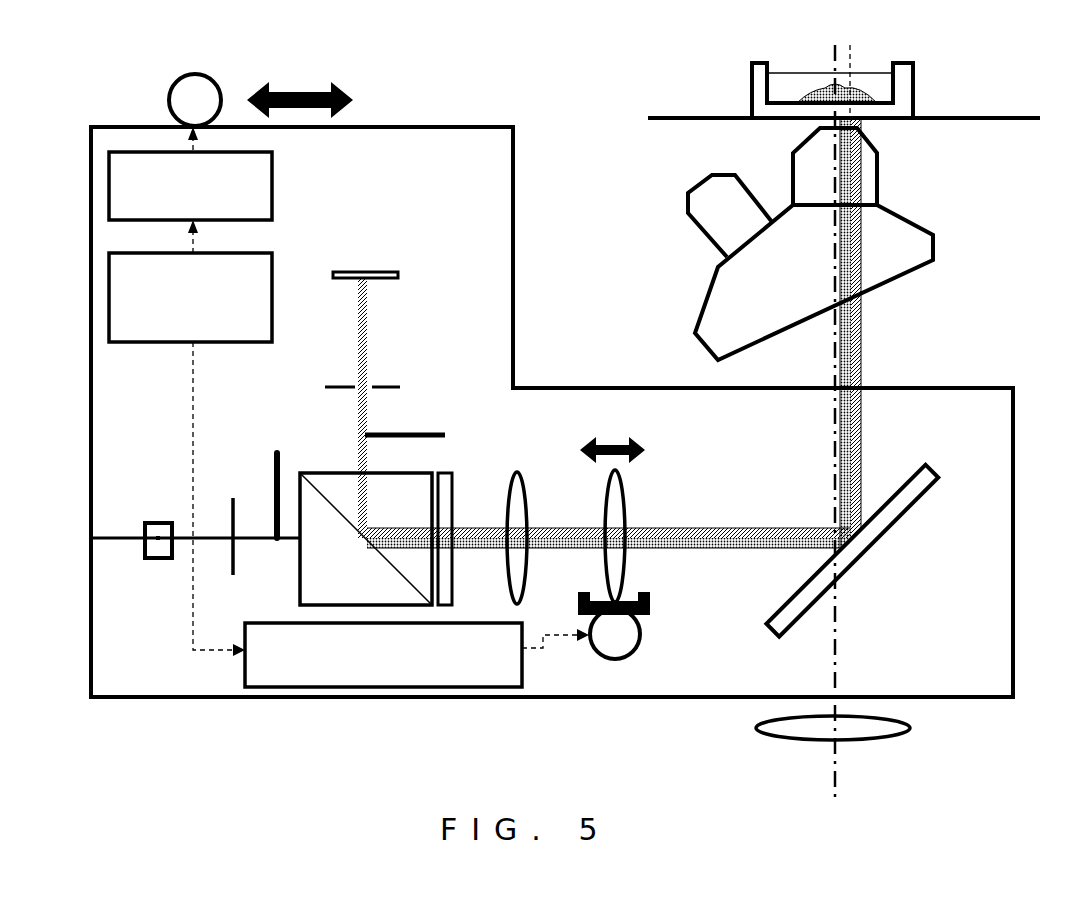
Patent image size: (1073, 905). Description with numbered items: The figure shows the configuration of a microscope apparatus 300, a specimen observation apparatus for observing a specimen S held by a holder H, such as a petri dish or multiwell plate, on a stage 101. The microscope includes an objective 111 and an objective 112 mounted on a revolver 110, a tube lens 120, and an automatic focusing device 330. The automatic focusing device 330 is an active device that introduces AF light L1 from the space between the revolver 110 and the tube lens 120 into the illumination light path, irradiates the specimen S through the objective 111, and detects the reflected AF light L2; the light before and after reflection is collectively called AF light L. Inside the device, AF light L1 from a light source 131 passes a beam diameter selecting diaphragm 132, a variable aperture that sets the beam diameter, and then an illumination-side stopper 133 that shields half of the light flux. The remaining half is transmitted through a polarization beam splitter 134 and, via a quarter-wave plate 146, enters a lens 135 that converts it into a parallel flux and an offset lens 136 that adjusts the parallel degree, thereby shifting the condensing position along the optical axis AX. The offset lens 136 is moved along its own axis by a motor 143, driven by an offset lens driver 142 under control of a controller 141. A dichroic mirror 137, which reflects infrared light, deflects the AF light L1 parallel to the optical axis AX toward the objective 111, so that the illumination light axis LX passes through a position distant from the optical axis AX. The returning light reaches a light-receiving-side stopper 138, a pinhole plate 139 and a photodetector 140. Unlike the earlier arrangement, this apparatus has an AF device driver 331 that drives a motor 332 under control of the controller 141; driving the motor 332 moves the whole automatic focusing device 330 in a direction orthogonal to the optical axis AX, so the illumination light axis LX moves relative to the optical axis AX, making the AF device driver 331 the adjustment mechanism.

The microscope apparatus 300 is at (186, 48).
The automatic focusing device 330 is at (427, 127).
The AF device driver 331 is at (274, 190).
The motor 332 is at (212, 76).
The controller 141 is at (273, 270).
The offset lens driver 142 is at (245, 655).
The motor 143 is at (641, 640).
The light source 131 is at (158, 523).
The beam diameter selecting diaphragm 132 is at (233, 500).
The illumination-side stopper 133 is at (276, 452).
The polarization beam splitter 134 is at (300, 577).
The lens 135 is at (514, 472).
The offset lens 136 is at (625, 510).
The dichroic mirror 137 is at (857, 565).
The light-receiving-side stopper 138 is at (386, 435).
The pinhole plate 139 is at (388, 386).
The photodetector 140 is at (366, 272).
The λ/4 plate 146 is at (450, 472).
The tube lens 120 is at (895, 716).
The stage 101 is at (960, 118).
The revolver 110 is at (935, 235).
The objective 111 is at (880, 170).
The objective 112 is at (705, 240).
The optical axis AX is at (838, 652).
The illumination light axis LX is at (850, 45).
The specimen S is at (860, 78).
The holder H is at (905, 63).
The AF light L1 is at (850, 320).
The AF light L2 is at (858, 347).
The AF light L is at (987, 345).